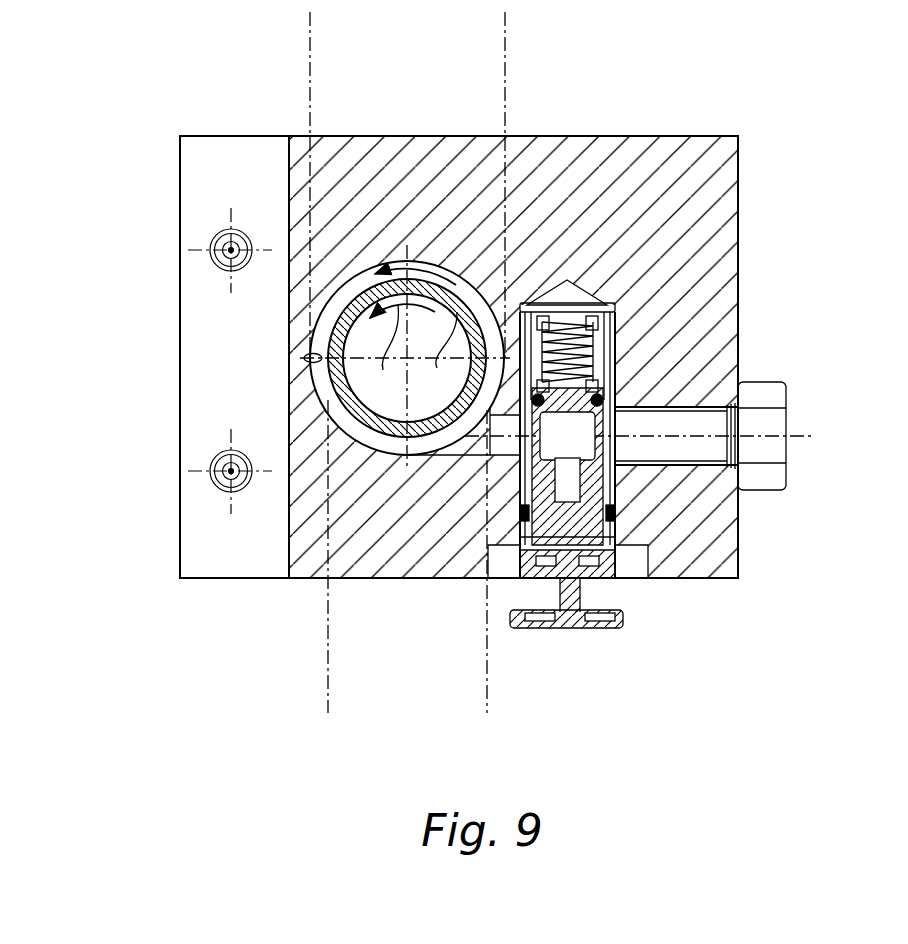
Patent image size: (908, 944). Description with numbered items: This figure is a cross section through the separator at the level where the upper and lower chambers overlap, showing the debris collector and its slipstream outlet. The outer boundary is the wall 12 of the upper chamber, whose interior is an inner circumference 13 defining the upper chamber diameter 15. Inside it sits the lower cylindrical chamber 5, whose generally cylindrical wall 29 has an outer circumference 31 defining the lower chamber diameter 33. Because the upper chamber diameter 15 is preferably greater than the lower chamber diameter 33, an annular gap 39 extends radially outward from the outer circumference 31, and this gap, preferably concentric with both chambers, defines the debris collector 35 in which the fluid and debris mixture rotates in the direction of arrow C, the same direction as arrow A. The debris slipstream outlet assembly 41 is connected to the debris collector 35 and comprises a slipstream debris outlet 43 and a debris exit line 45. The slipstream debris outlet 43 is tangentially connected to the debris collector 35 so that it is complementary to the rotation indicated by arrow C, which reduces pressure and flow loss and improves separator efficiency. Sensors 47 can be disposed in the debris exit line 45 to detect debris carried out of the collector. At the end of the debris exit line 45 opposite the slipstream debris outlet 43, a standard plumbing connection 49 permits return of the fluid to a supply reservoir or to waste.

The lower cylindrical chamber 5 is at (332, 413).
The wall 12 is at (288, 485).
The inner circumference 13 is at (318, 358).
The upper chamber diameter 15 is at (311, 35).
The wall 29 is at (330, 340).
The outer circumference 31 is at (352, 293).
The lower chamber diameter 33 is at (486, 670).
The debris collector 35 is at (360, 453).
The annular gap 39 is at (366, 268).
The debris slipstream outlet assembly 41 is at (667, 404).
The slipstream debris outlet 43 is at (450, 447).
The debris exit line 45 is at (662, 453).
The sensors 47 is at (645, 547).
The standard plumbing connection 49 is at (791, 425).